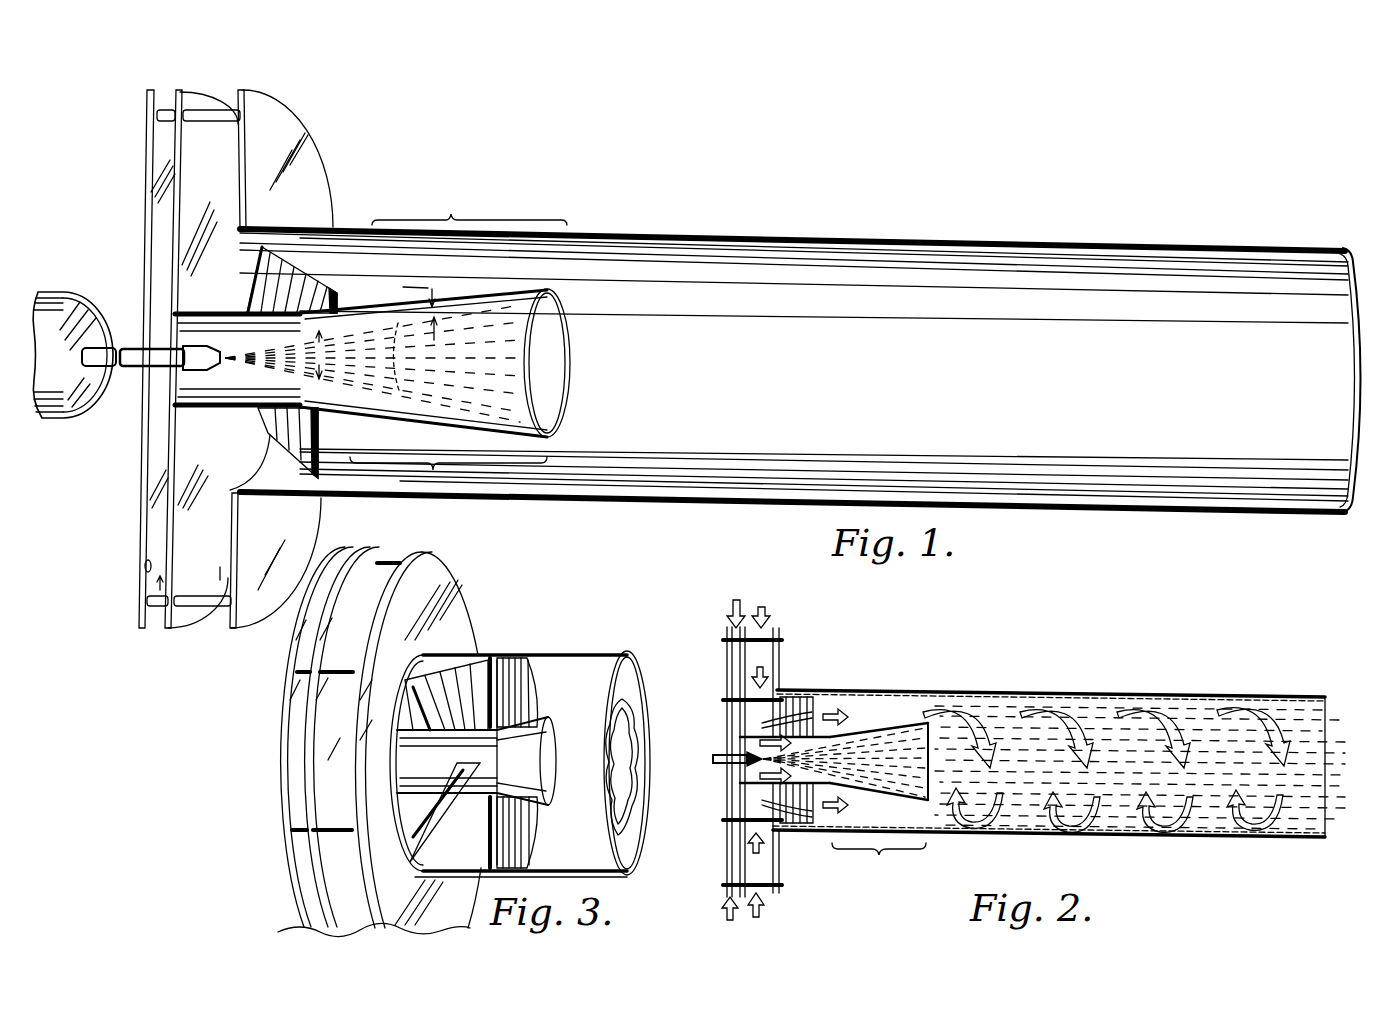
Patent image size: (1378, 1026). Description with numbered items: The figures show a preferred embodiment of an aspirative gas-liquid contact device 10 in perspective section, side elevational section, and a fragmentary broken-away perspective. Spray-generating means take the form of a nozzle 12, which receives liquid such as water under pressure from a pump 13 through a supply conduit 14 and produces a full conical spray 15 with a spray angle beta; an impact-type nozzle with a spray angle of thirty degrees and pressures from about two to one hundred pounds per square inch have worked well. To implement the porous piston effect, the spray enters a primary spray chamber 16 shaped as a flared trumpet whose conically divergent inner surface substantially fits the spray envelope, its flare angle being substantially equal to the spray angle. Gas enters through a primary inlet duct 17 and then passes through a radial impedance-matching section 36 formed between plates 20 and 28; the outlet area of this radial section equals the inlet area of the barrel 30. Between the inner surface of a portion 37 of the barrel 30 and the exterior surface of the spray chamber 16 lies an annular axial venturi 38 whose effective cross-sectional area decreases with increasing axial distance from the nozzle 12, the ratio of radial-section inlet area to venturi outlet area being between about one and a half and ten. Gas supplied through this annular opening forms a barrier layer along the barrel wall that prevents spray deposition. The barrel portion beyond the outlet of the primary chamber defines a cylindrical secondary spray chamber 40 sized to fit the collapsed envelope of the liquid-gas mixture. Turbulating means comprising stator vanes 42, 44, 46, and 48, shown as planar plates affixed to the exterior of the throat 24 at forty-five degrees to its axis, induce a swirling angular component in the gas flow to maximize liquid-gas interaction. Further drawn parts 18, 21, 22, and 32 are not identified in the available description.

In FIG. 1, the aspirative gas-liquid contact device 10 is at (456, 172).
In FIG. 2, the aspirative gas-liquid contact device 10 is at (897, 624).
In FIG. 1, the nozzle 12 is at (195, 345).
In FIG. 2, the nozzle 12 is at (755, 773).
In FIG. 1, the pump 13 is at (50, 416).
In FIG. 1, the supply conduit 14 is at (130, 378).
In FIG. 1, the full conical spray 15 is at (340, 338).
In FIG. 1, the primary spray chamber 16 is at (560, 366).
In FIG. 2, the primary spray chamber 16 is at (908, 752).
In FIG. 3, the primary spray chamber 16 is at (476, 763).
In FIG. 1, the primary inlet duct 17 is at (156, 603).
In FIG. 2, the primary inlet duct 17 is at (732, 665).
In FIG. 3, the primary inlet duct 17 is at (374, 742).
In FIG. 1, the flange plate 18 is at (141, 577).
In FIG. 2, the flange plate 18 is at (728, 685).
In FIG. 3, the flange plate 18 is at (353, 726).
In FIG. 1, the plate 20 is at (210, 553).
In FIG. 2, the plate 20 is at (742, 715).
In FIG. 3, the plate 20 is at (365, 618).
In FIG. 1, the bolts 21 is at (190, 648).
In FIG. 2, the bolts 21 is at (765, 633).
In FIG. 3, the bolts 21 is at (346, 696).
In FIG. 1, the nozzle holder tube 22 is at (178, 333).
In FIG. 2, the nozzle holder tube 22 is at (730, 749).
In FIG. 1, the throat 24 is at (233, 337).
In FIG. 2, the throat 24 is at (803, 710).
In FIG. 1, the plate 28 is at (283, 553).
In FIG. 2, the plate 28 is at (774, 857).
In FIG. 3, the plate 28 is at (436, 618).
In FIG. 1, the barrel 30 is at (750, 240).
In FIG. 2, the barrel 30 is at (1049, 763).
In FIG. 3, the barrel 30 is at (582, 652).
In FIG. 1, the combustion zone 32 is at (448, 476).
In FIG. 1, the radial impedance-matching section 36 is at (216, 575).
In FIG. 2, the radial impedance-matching section 36 is at (765, 654).
In FIG. 1, the portion of the barrel 37 is at (469, 205).
In FIG. 2, the portion of the barrel 37 is at (879, 861).
In FIG. 1, the annular axial venturi 38 is at (620, 275).
In FIG. 2, the annular axial venturi 38 is at (878, 713).
In FIG. 1, the secondary spray chamber 40 is at (862, 298).
In FIG. 2, the secondary spray chamber 40 is at (1048, 745).
In FIG. 1, the stator vane 42 is at (297, 283).
In FIG. 2, the stator vane 42 is at (796, 760).
In FIG. 3, the stator vane 42 is at (440, 700).
In FIG. 3, the stator vane 44 is at (517, 692).
In FIG. 1, the stator vane 46 is at (268, 418).
In FIG. 3, the stator vane 46 is at (500, 812).
In FIG. 3, the stator vane 48 is at (450, 800).